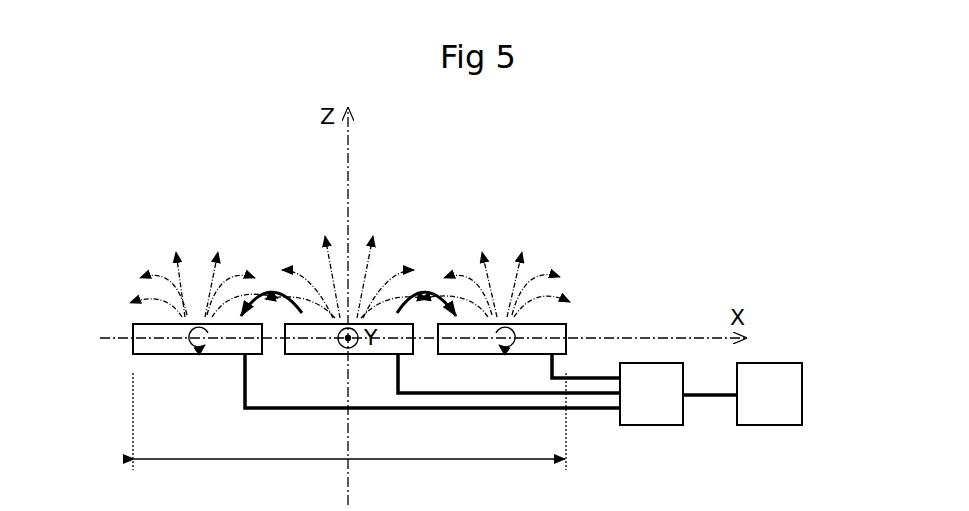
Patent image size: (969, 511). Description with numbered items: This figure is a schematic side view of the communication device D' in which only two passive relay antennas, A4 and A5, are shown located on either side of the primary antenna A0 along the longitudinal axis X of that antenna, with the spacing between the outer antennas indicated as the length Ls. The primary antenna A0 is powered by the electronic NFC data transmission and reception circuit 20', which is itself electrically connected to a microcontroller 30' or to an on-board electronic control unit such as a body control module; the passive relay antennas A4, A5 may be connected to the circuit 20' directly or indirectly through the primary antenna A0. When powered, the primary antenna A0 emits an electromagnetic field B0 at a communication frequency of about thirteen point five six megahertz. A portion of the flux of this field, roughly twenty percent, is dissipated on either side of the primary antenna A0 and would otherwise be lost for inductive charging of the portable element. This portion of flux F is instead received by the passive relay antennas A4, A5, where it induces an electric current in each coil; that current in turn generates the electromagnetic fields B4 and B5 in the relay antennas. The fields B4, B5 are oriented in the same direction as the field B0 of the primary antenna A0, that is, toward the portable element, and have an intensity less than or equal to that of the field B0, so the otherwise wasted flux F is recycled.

The device D' is at (242, 129).
The passive relay antenna A4 is at (143, 351).
The primary antenna A0 is at (295, 352).
The passive relay antenna A5 is at (448, 351).
The electronic NFC data transmission and reception circuit 20' is at (671, 425).
The microcontroller 30' is at (788, 425).
The electromagnetic field B4 is at (204, 269).
The electromagnetic field B0 is at (346, 269).
The electromagnetic field B5 is at (495, 269).
The portion of flux F is at (348, 293).
The spacing length Ls is at (349, 421).